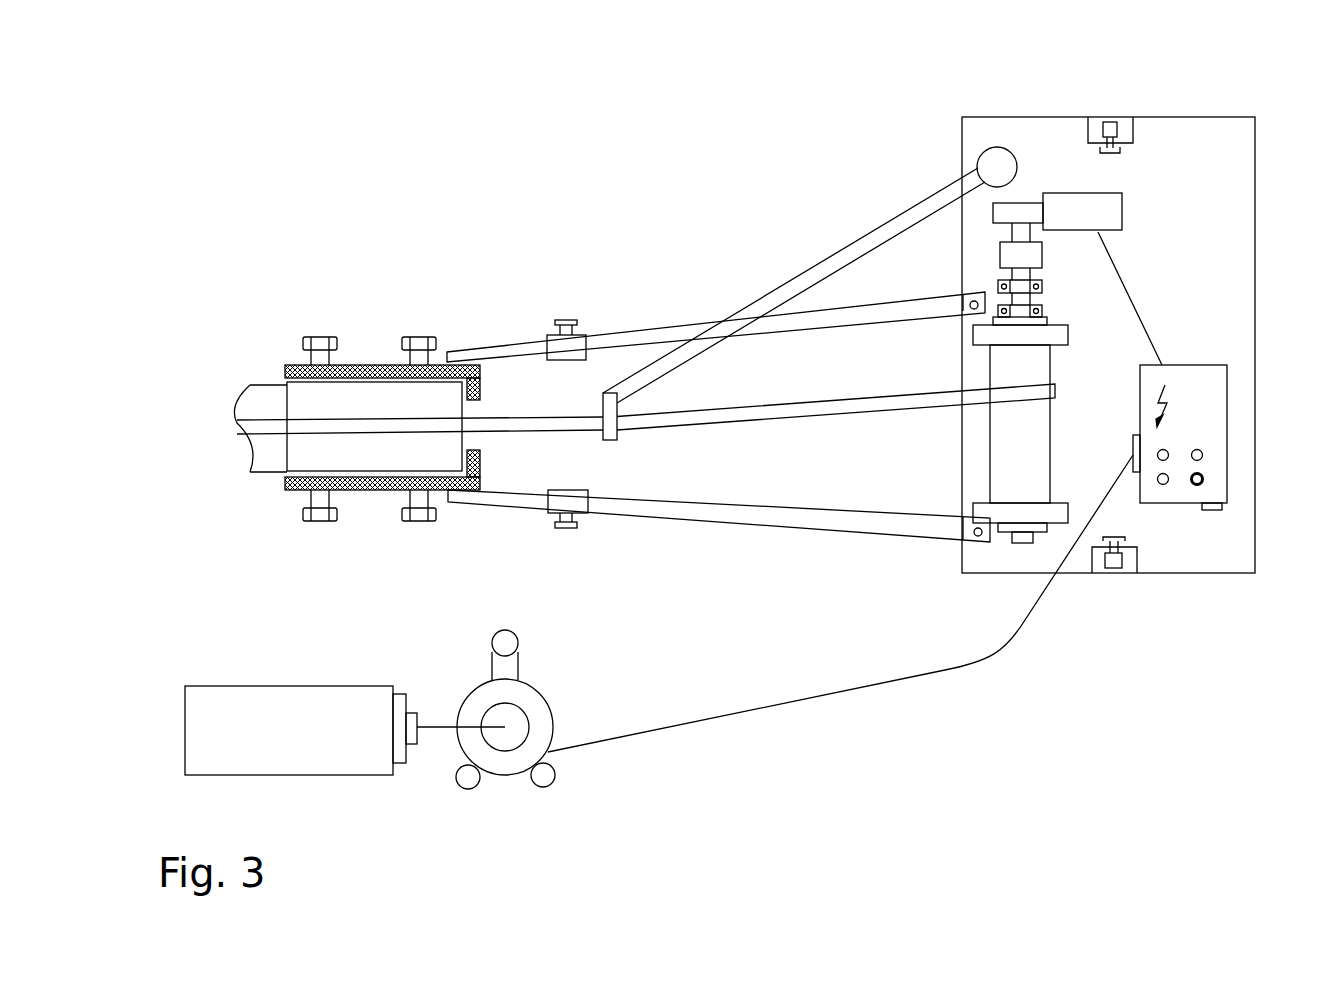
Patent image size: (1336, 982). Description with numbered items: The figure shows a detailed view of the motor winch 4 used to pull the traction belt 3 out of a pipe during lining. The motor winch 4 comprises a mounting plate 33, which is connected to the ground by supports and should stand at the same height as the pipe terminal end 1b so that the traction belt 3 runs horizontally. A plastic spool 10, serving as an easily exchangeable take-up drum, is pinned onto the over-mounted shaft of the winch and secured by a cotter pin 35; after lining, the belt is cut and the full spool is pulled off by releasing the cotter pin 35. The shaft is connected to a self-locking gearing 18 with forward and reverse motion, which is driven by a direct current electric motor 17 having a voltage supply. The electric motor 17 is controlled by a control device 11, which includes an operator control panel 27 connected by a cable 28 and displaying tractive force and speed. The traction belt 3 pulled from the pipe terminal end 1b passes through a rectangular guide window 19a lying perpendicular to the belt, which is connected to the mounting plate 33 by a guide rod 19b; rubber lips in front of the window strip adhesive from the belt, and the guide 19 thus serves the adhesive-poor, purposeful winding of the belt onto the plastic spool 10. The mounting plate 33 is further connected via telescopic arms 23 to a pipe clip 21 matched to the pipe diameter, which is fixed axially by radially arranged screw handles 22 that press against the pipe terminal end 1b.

The motor winch 4 is at (1220, 105).
The traction belt 3 is at (237, 423).
The pipe terminal end 1b is at (440, 445).
The pipe clip 21 is at (351, 371).
The screw handles 22 is at (419, 340).
The telescopic arms 23 is at (494, 348).
The guide 19 is at (770, 268).
The rectangular guide window 19a is at (610, 440).
The guide rod 19b is at (818, 272).
The gearing 18 is at (1026, 215).
The direct current electric motor 17 is at (1068, 215).
The plastic spool 10 is at (1043, 515).
The cotter pin 35 is at (1000, 537).
The mounting plate 33 is at (1127, 125).
The control device 11 is at (1213, 513).
The operator control panel 27 is at (230, 733).
The cable 28 is at (440, 727).